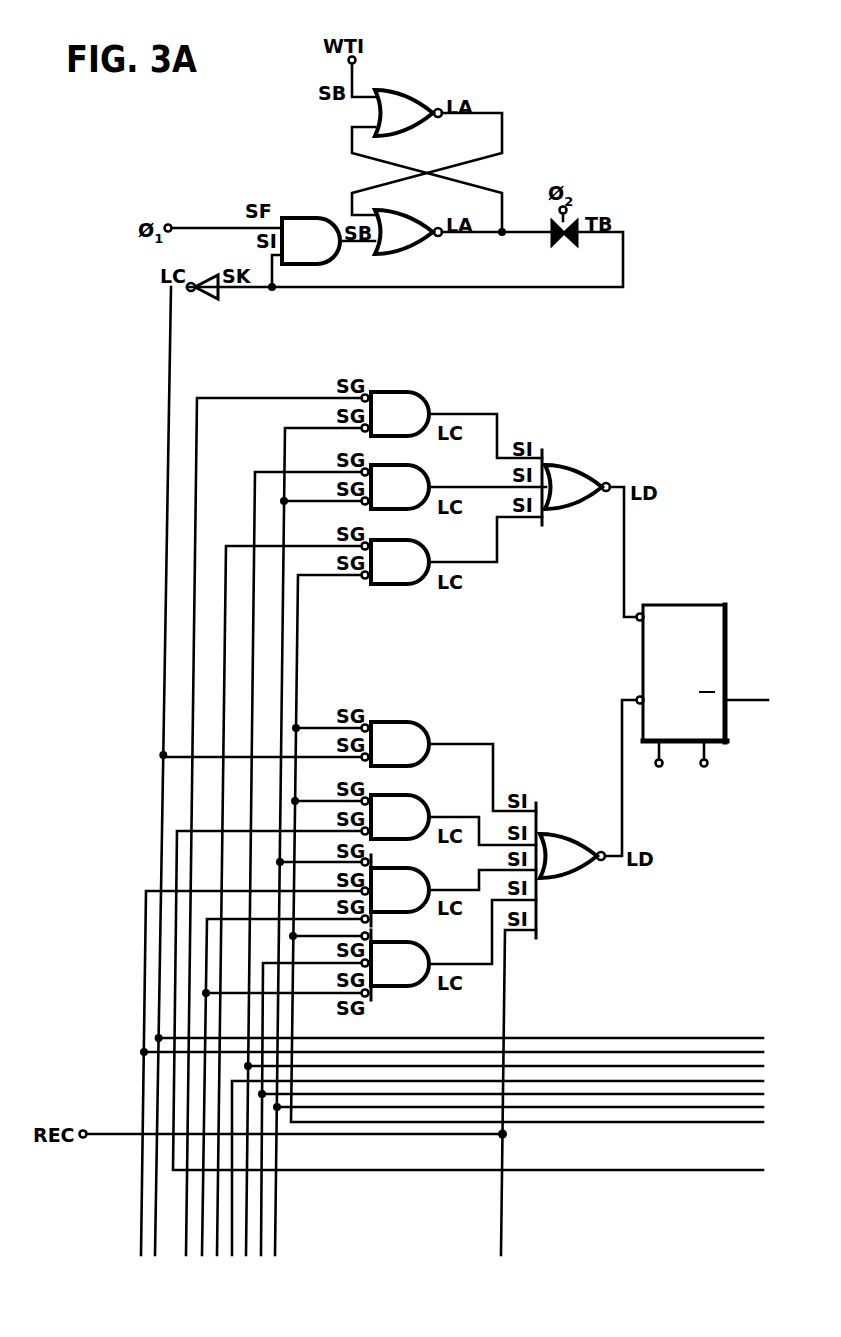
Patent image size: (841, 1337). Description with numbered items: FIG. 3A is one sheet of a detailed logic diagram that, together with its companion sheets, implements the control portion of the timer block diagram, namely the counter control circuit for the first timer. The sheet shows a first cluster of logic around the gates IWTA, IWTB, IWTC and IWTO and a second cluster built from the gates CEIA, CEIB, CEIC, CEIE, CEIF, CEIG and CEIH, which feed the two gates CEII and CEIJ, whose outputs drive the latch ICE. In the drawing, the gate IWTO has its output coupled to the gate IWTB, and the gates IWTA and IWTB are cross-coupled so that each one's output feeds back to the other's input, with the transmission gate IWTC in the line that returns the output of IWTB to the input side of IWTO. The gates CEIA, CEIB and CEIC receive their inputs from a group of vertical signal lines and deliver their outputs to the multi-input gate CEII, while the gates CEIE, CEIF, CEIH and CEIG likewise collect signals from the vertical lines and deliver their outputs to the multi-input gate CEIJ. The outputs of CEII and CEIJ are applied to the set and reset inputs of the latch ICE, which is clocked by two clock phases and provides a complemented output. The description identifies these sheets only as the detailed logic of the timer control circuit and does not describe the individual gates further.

The NOR gate IWTA is at (411, 101).
The NOR gate IWTB is at (410, 220).
The transmission gate IWTC is at (562, 249).
The AND gate with inverter IWTO is at (261, 258).
The AND gate CEIA is at (409, 403).
The AND gate CEIB is at (409, 476).
The AND gate CEIC is at (408, 551).
The AND gate CEIE is at (407, 733).
The AND gate CEIF is at (407, 806).
The AND gate CEIG is at (408, 957).
The AND gate CEIH is at (408, 885).
The NOR gate CEII is at (581, 483).
The NOR gate CEIJ is at (571, 870).
The latch ICE is at (703, 687).